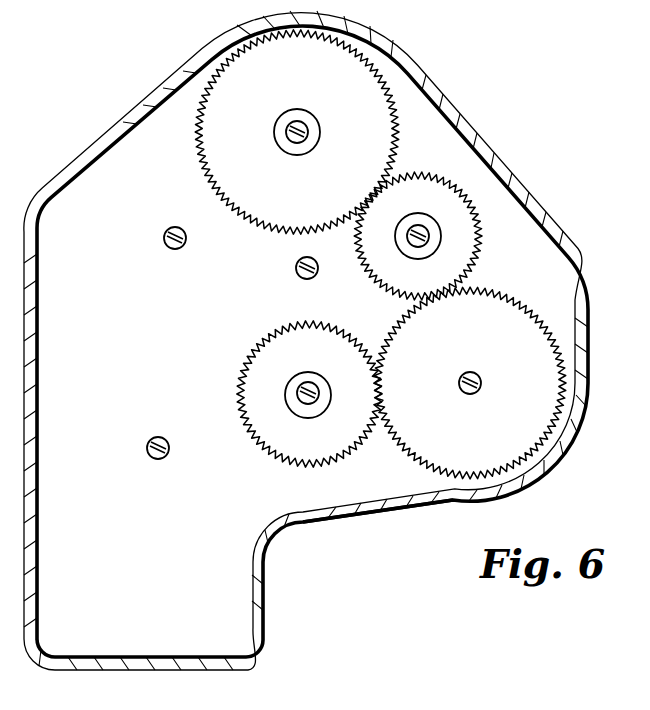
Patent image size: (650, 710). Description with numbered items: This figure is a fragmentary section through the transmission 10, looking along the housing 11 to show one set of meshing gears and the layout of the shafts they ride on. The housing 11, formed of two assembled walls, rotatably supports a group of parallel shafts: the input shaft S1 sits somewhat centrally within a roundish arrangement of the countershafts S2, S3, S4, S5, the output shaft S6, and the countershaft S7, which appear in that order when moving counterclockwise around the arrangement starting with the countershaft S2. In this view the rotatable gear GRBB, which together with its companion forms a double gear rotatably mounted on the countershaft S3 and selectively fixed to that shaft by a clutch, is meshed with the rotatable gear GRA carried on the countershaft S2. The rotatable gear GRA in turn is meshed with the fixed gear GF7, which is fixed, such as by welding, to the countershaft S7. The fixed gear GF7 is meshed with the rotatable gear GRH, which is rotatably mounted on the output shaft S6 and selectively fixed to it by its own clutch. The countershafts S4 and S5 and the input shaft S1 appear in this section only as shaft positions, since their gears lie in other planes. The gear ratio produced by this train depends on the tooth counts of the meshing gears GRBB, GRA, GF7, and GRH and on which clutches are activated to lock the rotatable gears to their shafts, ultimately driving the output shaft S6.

The transmission 10 is at (487, 138).
The housing 11 is at (344, 523).
The rotatable gear GRBB is at (198, 172).
The rotatable gear GRA is at (480, 241).
The fixed gear GF7 is at (490, 353).
The rotatable gear GRH is at (238, 396).
The input shaft S1 is at (297, 273).
The countershaft S2 is at (420, 226).
The countershaft S3 is at (296, 144).
The countershaft S4 is at (166, 245).
The countershaft S5 is at (160, 459).
The output shaft S6 is at (298, 405).
The countershaft S7 is at (482, 383).